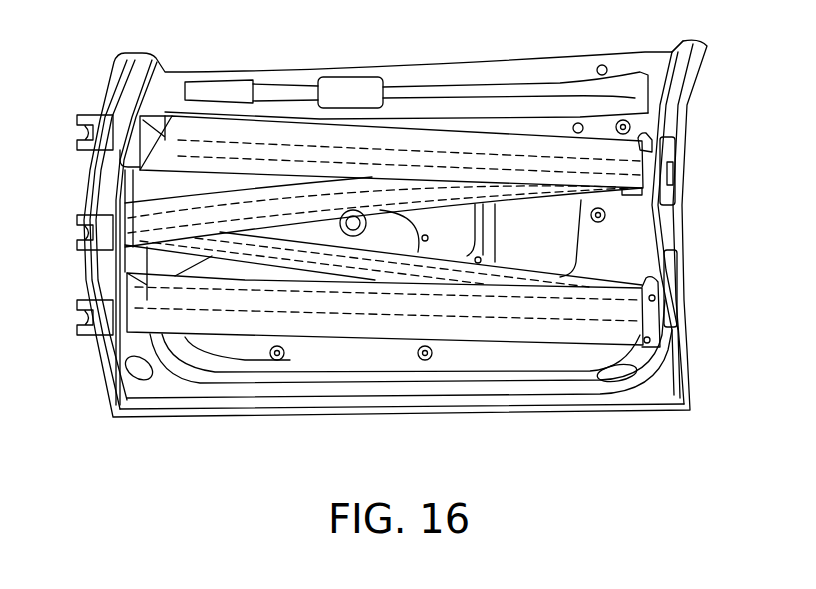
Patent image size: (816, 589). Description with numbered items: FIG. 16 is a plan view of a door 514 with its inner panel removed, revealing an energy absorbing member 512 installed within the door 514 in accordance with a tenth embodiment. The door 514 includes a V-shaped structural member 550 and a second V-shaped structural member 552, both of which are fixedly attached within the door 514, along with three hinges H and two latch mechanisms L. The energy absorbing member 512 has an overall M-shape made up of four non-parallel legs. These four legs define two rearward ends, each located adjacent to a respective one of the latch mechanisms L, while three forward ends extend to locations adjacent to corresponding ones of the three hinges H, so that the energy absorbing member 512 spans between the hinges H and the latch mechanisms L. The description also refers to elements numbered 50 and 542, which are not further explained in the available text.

The vehicle door 50 is at (652, 345).
The energy absorbing member 512 is at (527, 136).
The door 514 is at (412, 63).
The inner door panel 542 is at (321, 348).
The V-shaped structural member 550 is at (655, 323).
The second V-shaped structural member 552 is at (648, 133).
The latch mechanism L is at (670, 153).
The hinge H is at (77, 119).